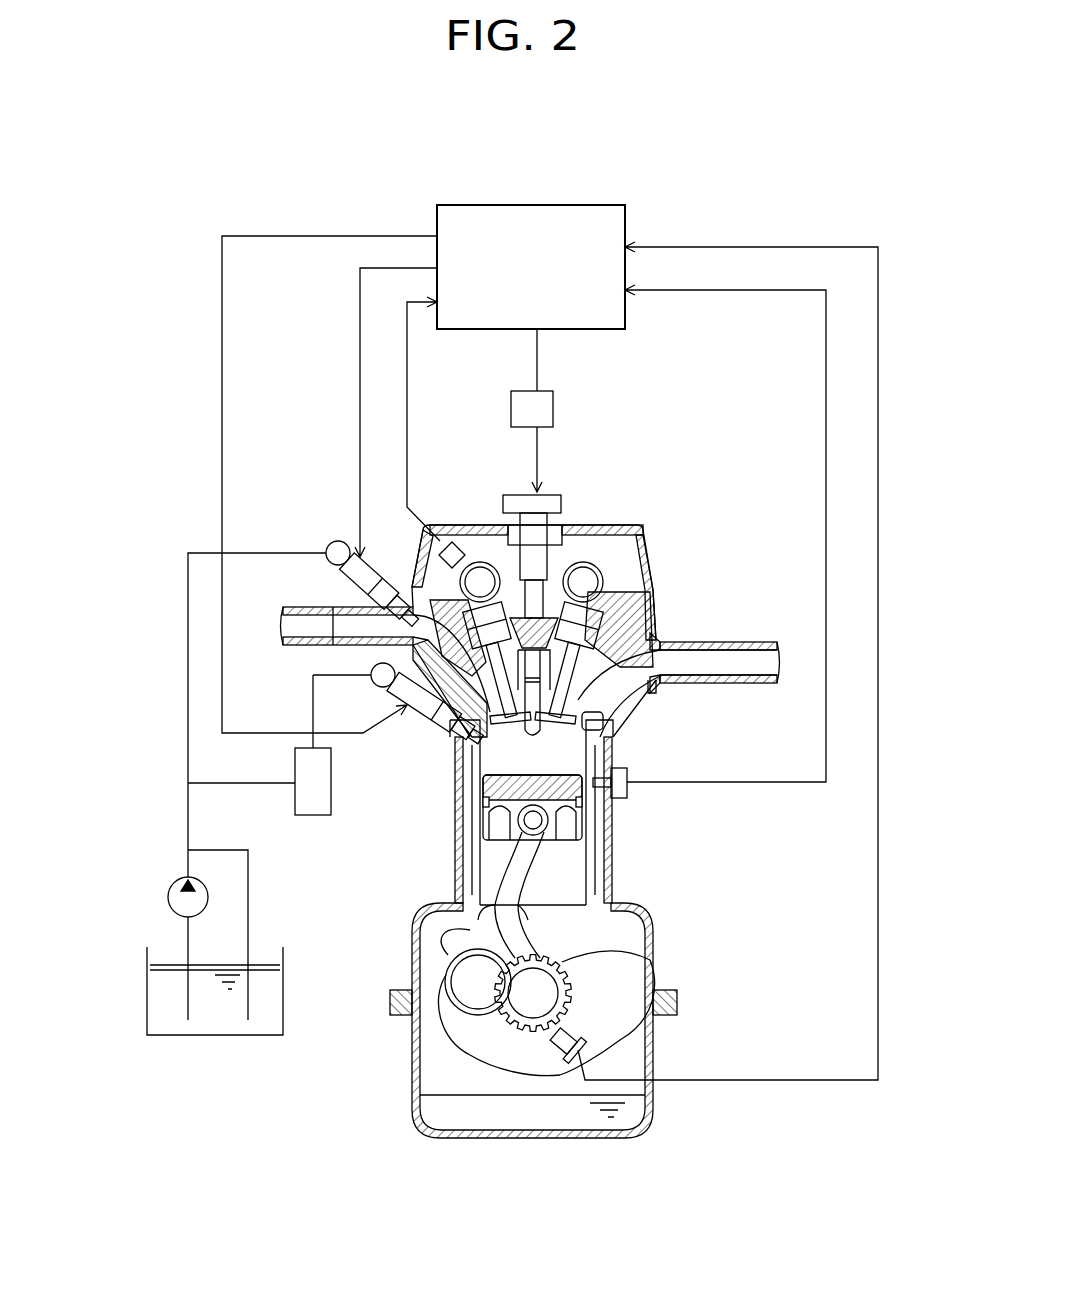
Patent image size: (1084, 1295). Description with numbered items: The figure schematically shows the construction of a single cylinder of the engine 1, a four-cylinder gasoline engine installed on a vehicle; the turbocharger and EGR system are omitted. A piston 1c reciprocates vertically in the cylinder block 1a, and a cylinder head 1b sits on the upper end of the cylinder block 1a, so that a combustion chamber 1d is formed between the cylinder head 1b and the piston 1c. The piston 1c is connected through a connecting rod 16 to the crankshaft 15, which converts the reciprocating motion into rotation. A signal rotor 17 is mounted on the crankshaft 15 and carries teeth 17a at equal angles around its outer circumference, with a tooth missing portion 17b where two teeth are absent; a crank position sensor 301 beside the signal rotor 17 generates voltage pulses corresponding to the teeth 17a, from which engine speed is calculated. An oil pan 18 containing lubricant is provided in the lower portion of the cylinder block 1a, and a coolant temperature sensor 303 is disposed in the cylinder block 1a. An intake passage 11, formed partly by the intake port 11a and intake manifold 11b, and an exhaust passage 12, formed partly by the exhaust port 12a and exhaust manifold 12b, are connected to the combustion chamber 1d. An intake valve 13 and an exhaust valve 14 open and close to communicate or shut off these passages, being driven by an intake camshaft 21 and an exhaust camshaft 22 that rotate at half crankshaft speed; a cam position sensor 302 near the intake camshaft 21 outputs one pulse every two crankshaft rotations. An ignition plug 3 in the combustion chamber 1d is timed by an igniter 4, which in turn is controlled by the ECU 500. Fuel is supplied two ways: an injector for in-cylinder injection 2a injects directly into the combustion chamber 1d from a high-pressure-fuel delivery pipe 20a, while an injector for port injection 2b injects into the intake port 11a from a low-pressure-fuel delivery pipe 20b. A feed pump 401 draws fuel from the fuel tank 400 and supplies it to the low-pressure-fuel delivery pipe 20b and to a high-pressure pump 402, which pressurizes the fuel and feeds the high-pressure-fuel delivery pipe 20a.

The engine 1 is at (729, 840).
The cylinder block 1a is at (612, 845).
The cylinder head 1b is at (653, 600).
The piston 1c is at (477, 830).
The combustion chamber 1d is at (493, 768).
The injector for in-cylinder injection 2a is at (413, 705).
The injector for port injection 2b is at (350, 585).
The ignition plug 3 is at (597, 768).
The igniter 4 is at (556, 409).
The intake passage 11 is at (289, 654).
The intake port 11a is at (442, 640).
The intake manifold 11b is at (350, 622).
The exhaust passage 12 is at (739, 629).
The exhaust port 12a is at (660, 645).
The exhaust manifold 12b is at (728, 667).
The intake valve 13 is at (447, 727).
The exhaust valve 14 is at (583, 717).
The crankshaft 15 is at (523, 997).
The connecting rod 16 is at (478, 877).
The signal rotor 17 is at (520, 1025).
The teeth 17a is at (572, 972).
The tooth missing portion 17b is at (567, 952).
The oil pan 18 is at (649, 1143).
The high-pressure-fuel delivery pipe 20a is at (380, 687).
The low-pressure-fuel delivery pipe 20b is at (340, 541).
The intake camshaft 21 is at (483, 550).
The exhaust camshaft 22 is at (585, 550).
The crank position sensor 301 is at (647, 1062).
The cam position sensor 302 is at (455, 540).
The coolant temperature sensor 303 is at (628, 797).
The fuel tank 400 is at (215, 1038).
The feed pump 401 is at (172, 886).
The high-pressure pump 402 is at (315, 815).
The ECU 500 is at (584, 204).